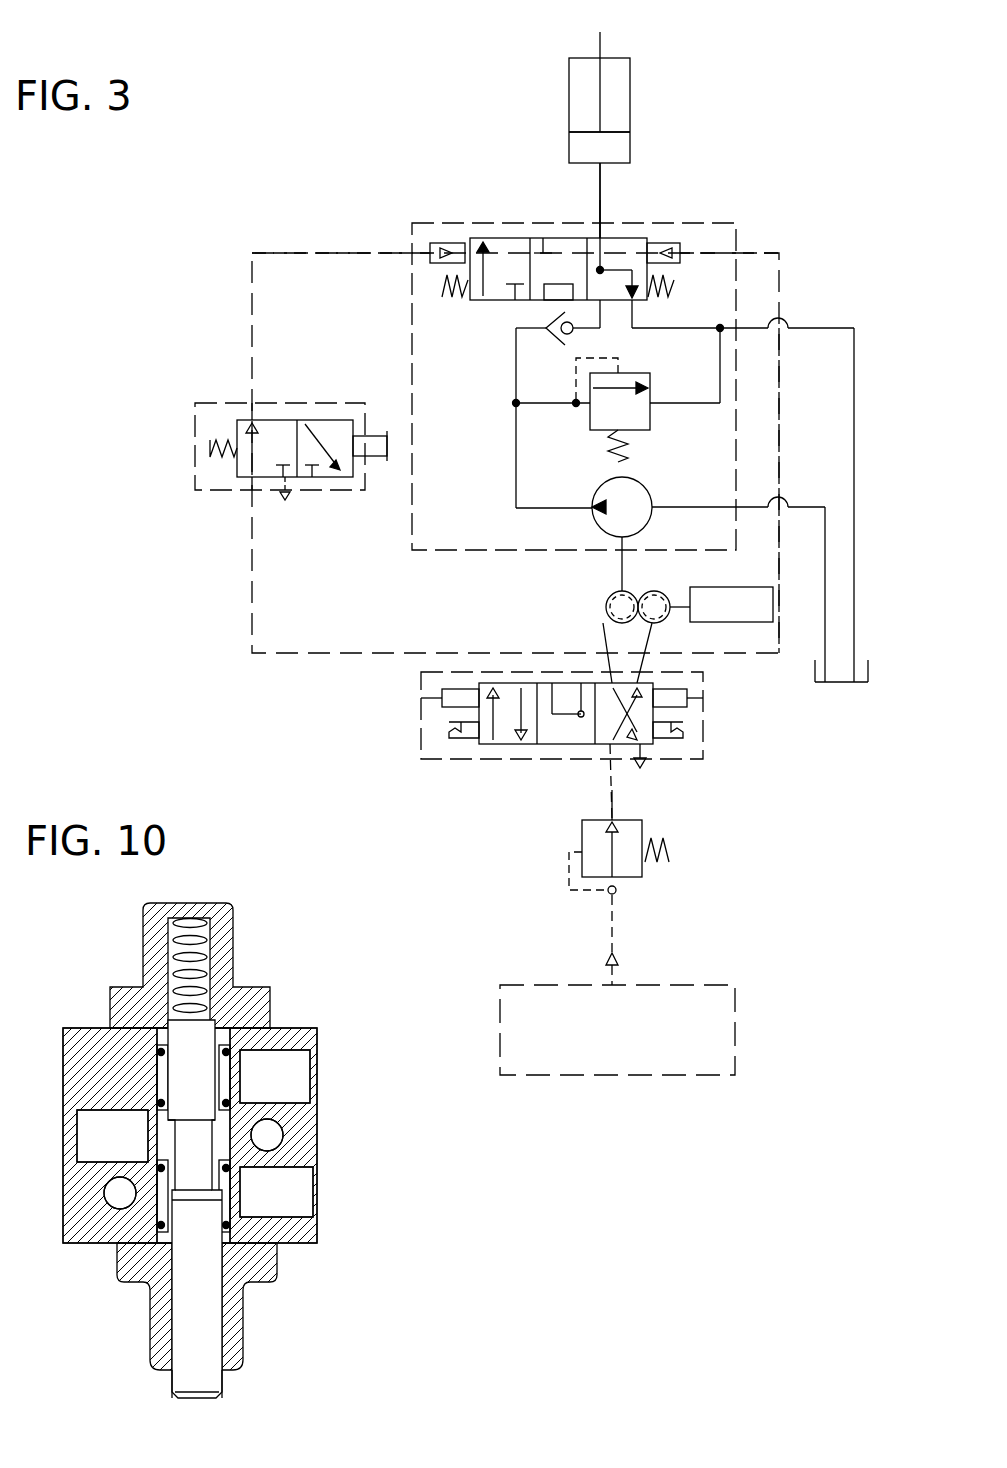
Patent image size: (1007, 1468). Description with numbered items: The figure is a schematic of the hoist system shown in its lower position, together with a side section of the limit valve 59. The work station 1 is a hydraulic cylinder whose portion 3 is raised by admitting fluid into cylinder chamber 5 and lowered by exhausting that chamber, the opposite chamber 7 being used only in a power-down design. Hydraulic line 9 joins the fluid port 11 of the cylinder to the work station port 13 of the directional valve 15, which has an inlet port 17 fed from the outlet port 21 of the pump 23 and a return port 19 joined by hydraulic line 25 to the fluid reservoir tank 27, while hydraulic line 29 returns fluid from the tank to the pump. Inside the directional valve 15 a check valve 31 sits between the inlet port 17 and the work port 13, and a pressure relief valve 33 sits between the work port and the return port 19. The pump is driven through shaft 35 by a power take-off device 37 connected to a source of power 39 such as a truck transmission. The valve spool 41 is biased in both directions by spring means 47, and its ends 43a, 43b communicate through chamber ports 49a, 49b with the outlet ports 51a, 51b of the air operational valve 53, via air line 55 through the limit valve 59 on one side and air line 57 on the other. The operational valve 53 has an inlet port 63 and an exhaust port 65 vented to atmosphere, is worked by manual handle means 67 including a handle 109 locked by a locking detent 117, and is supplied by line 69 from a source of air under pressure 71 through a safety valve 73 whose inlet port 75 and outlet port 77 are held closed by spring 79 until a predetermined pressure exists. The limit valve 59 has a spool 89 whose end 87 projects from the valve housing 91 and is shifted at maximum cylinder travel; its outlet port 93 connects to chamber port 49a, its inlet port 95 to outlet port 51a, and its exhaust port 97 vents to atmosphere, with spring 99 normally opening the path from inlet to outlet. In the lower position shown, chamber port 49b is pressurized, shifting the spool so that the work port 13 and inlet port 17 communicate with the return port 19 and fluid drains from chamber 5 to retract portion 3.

In FIG. 3, the work station 1 is at (630, 68).
In FIG. 3, the portion 3 is at (603, 97).
In FIG. 3, the cylinder chamber 5 is at (613, 143).
In FIG. 3, the chamber 7 is at (582, 92).
In FIG. 3, the hydraulic line 9 is at (598, 205).
In FIG. 3, the fluid port 11 is at (598, 168).
In FIG. 3, the fluid work station port 13 is at (603, 223).
In FIG. 3, the directional valve 15 is at (684, 225).
In FIG. 3, the inlet port 17 is at (516, 478).
In FIG. 3, the return port 19 is at (740, 326).
In FIG. 3, the outlet port 21 is at (532, 508).
In FIG. 3, the pump 23 is at (622, 478).
In FIG. 3, the hydraulic line 25 is at (822, 328).
In FIG. 3, the fluid reservoir tank 27 is at (868, 675).
In FIG. 3, the hydraulic line 29 is at (806, 505).
In FIG. 3, the check valve 31 is at (573, 333).
In FIG. 3, the pressure relief valve 33 is at (648, 392).
In FIG. 3, the shaft 35 is at (603, 572).
In FIG. 3, the power take-off device 37 is at (604, 604).
In FIG. 3, the source of power 39 is at (662, 622).
In FIG. 3, the valve spool 41 is at (495, 240).
In FIG. 3, the spool end 43a is at (445, 242).
In FIG. 3, the spool end 43b is at (655, 270).
In FIG. 3, the spring means 47 is at (450, 298).
In FIG. 3, the chamber port 49a is at (410, 252).
In FIG. 3, the chamber port 49b is at (737, 250).
In FIG. 3, the outlet port 51a is at (604, 670).
In FIG. 3, the outlet port 51b is at (644, 672).
In FIG. 3, the air operational valve 53 is at (710, 766).
In FIG. 3, the air line 55 is at (253, 318).
In FIG. 3, the air line 57 is at (780, 445).
In FIG. 3, the limit valve 59 is at (195, 452).
In FIG. 10, the limit valve 59 is at (270, 998).
In FIG. 3, the inlet port 63 is at (612, 758).
In FIG. 3, the exhaust port 65 is at (646, 762).
In FIG. 3, the manual handle means 67 is at (449, 733).
In FIG. 3, the line 69 is at (615, 795).
In FIG. 3, the source of air under pressure 71 is at (735, 1035).
In FIG. 3, the safety valve 73 is at (582, 836).
In FIG. 3, the inlet port 75 is at (616, 900).
In FIG. 3, the outlet port 77 is at (610, 818).
In FIG. 3, the spring 79 is at (670, 850).
In FIG. 3, the end 87 is at (382, 462).
In FIG. 10, the end 87 is at (225, 1388).
In FIG. 3, the limit valve spool 89 is at (270, 420).
In FIG. 10, the limit valve spool 89 is at (200, 1292).
In FIG. 3, the valve housing 91 is at (200, 493).
In FIG. 10, the valve housing 91 is at (305, 1145).
In FIG. 3, the outlet port 93 is at (250, 403).
In FIG. 10, the outlet port 93 is at (77, 1135).
In FIG. 3, the inlet port 95 is at (250, 493).
In FIG. 10, the inlet port 95 is at (313, 1197).
In FIG. 3, the exhaust port 97 is at (287, 493).
In FIG. 10, the exhaust port 97 is at (310, 1080).
In FIG. 3, the spring 99 is at (210, 445).
In FIG. 10, the spring 99 is at (172, 945).
In FIG. 3, the handle 109 is at (442, 698).
In FIG. 3, the locking detent 117 is at (449, 733).